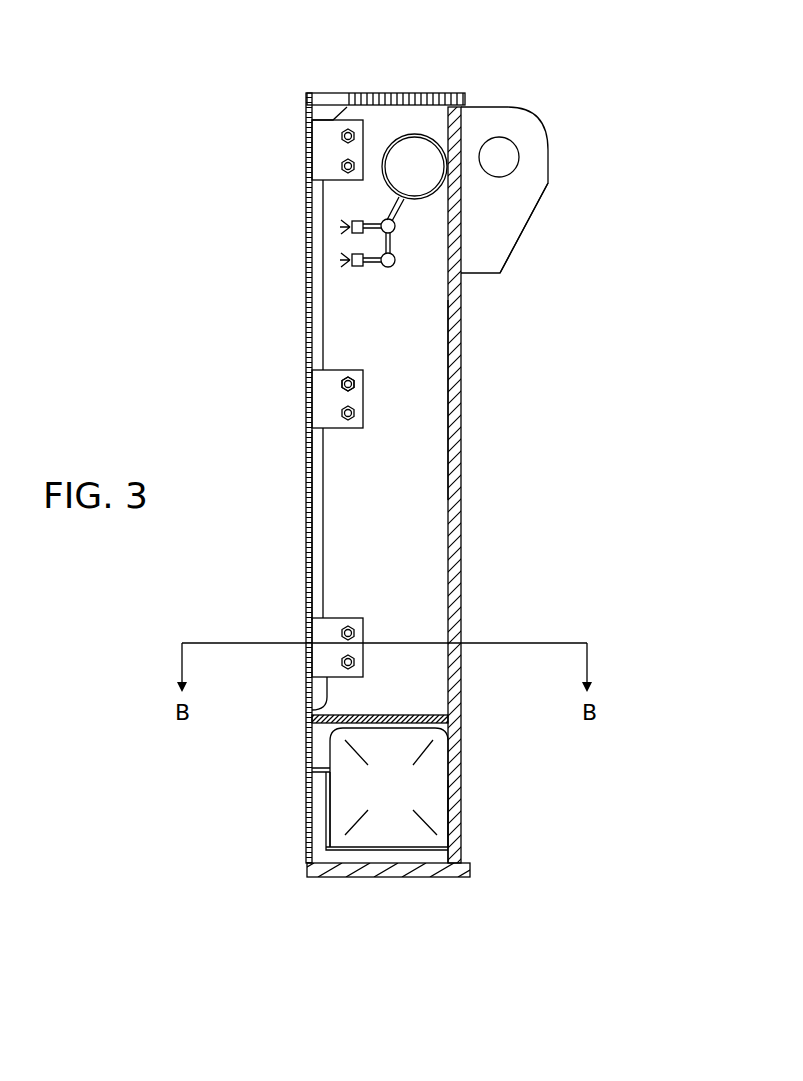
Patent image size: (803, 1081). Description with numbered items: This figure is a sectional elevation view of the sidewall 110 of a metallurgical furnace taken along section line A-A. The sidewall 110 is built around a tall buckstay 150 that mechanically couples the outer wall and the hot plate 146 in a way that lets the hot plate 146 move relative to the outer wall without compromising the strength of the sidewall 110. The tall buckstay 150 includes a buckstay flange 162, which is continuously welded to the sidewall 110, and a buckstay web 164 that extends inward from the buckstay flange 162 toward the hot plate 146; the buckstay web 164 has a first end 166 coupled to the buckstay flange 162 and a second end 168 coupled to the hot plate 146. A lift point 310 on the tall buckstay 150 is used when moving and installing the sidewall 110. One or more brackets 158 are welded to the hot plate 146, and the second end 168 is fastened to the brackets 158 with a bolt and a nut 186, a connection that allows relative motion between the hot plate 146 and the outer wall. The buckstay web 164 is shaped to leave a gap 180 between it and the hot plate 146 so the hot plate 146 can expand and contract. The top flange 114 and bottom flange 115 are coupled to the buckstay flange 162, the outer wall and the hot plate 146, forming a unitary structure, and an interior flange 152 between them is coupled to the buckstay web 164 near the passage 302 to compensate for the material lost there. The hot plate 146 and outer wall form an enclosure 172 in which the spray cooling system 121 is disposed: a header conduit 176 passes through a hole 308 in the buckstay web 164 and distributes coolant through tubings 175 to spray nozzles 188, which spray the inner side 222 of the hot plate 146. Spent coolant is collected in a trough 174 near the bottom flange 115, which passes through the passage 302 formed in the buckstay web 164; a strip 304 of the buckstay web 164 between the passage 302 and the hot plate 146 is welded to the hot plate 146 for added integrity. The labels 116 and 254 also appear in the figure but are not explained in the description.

The sidewall 110 is at (417, 435).
The top flange 114 is at (440, 93).
The bottom flange 115 is at (427, 878).
The modular assembly 116 is at (176, 278).
The spray cooling system 121 is at (390, 135).
The hot plate 146 is at (305, 163).
The tall buckstay 150 is at (417, 304).
The interior flange 152 is at (393, 715).
The brackets 158 is at (317, 134).
The buckstay flange 162 is at (462, 518).
The buckstay web 164 is at (335, 203).
The first end 166 is at (433, 379).
The second end 168 is at (323, 463).
The enclosure 172 is at (385, 652).
The trough 174 is at (452, 832).
The tubings 175 is at (392, 218).
The header conduit 176 is at (458, 213).
The gap 180 is at (317, 488).
The nut 186 is at (355, 385).
The spray nozzles 188 is at (350, 280).
The inner side 222 is at (310, 533).
The support bracket 254 is at (327, 802).
The passage 302 is at (452, 732).
The strip 304 is at (320, 742).
The hole 308 is at (407, 134).
The lift point 310 is at (547, 140).